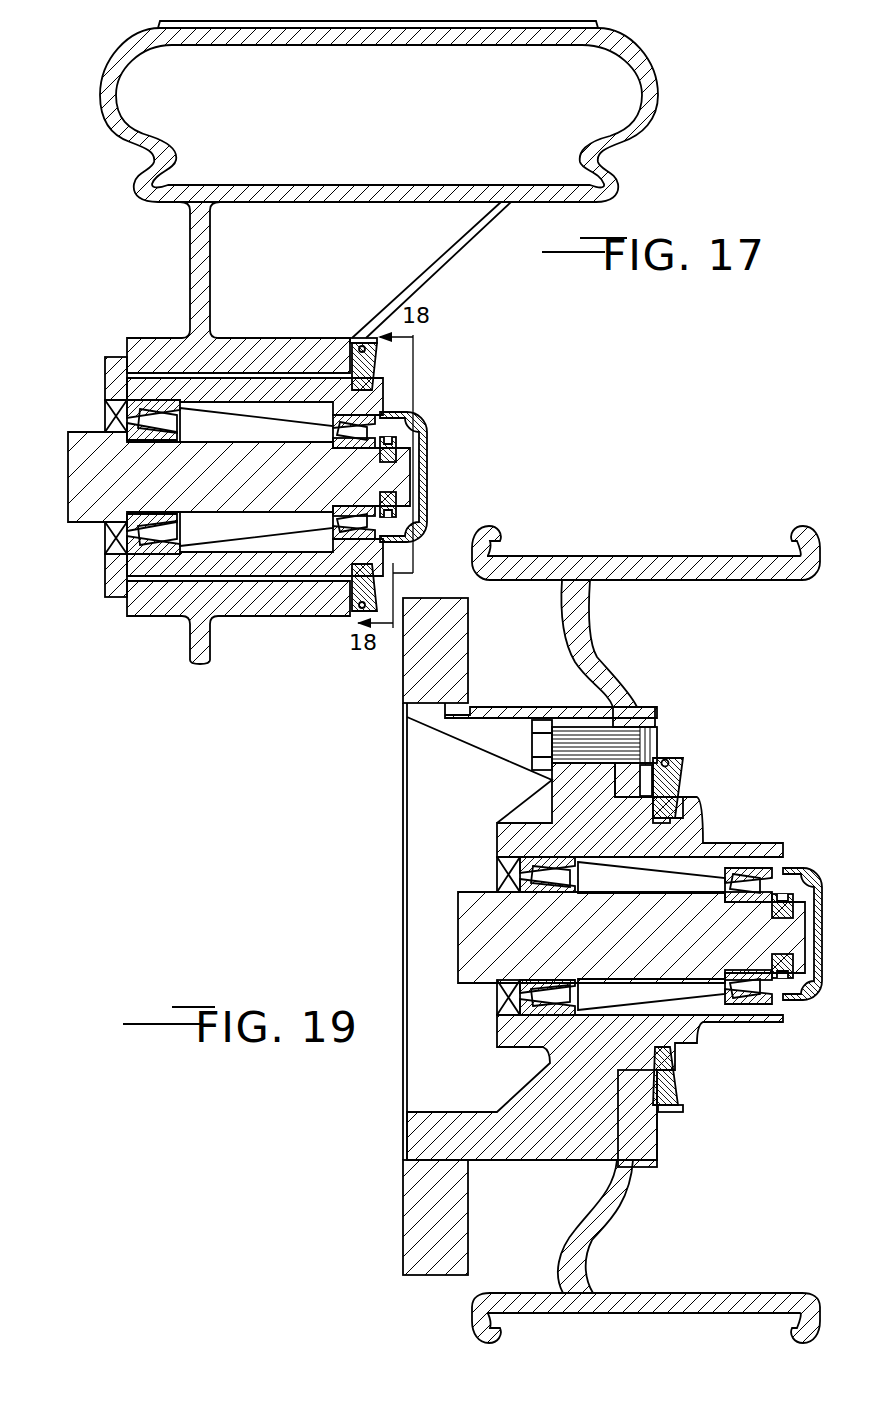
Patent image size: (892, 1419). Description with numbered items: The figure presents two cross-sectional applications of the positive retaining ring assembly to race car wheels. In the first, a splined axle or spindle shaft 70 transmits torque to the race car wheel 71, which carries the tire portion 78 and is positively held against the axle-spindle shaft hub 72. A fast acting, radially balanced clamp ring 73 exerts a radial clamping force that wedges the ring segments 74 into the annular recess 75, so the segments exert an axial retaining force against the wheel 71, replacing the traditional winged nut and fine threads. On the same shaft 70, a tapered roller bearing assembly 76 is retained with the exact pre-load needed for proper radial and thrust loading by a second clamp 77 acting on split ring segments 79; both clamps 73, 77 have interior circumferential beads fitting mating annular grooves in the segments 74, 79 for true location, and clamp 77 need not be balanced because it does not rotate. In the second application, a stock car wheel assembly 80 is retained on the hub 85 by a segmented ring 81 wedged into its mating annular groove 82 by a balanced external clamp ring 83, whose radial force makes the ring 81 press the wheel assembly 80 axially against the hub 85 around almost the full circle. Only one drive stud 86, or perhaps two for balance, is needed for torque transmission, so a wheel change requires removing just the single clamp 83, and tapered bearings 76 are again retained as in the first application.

In FIG. 17, the axle or spindle shaft 70 is at (85, 432).
In FIG. 19, the axle or spindle shaft 70 is at (467, 893).
In FIG. 17, the race car wheel 71 is at (190, 292).
In FIG. 17, the axle-spindle shaft hub 72 is at (115, 363).
In FIG. 17, the clamp ring 73 is at (380, 330).
In FIG. 17, the ring segments 74 is at (378, 360).
In FIG. 17, the annular recess 75 is at (343, 400).
In FIG. 17, the tapered roller bearing assembly 76 is at (335, 428).
In FIG. 19, the tapered roller bearing assembly 76 is at (723, 885).
In FIG. 17, the clamp 77 is at (385, 438).
In FIG. 19, the clamp 77 is at (788, 895).
In FIG. 17, the tire portion 78 is at (643, 53).
In FIG. 17, the split ring segments 79 is at (427, 443).
In FIG. 19, the split ring segments 79 is at (803, 901).
In FIG. 19, the wheel assembly 80 is at (620, 663).
In FIG. 19, the segmented ring 81 is at (683, 773).
In FIG. 19, the annular groove 82 is at (667, 820).
In FIG. 19, the balanced external clamp ring 83 is at (667, 758).
In FIG. 19, the hub 85 is at (592, 777).
In FIG. 19, the drive stud 86 is at (647, 740).